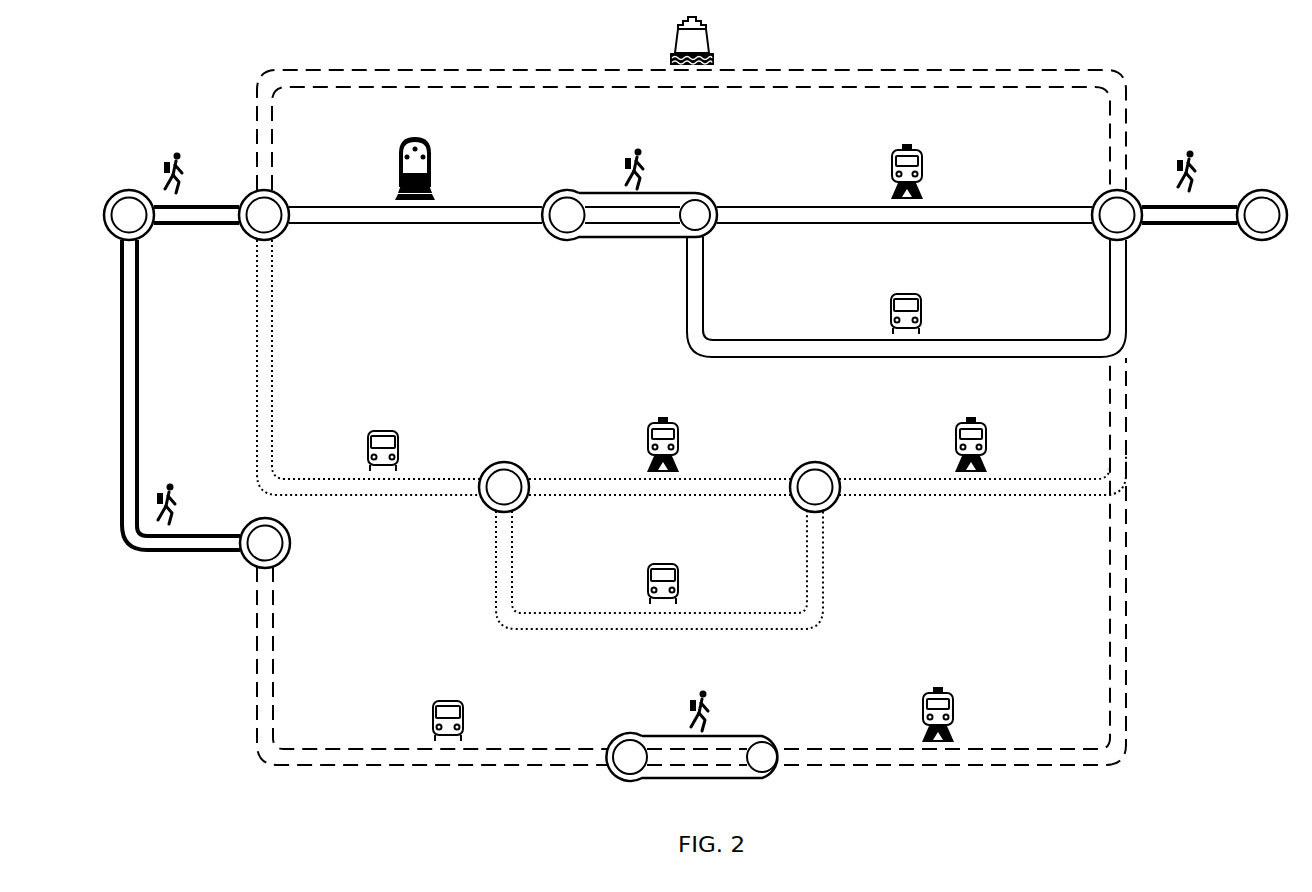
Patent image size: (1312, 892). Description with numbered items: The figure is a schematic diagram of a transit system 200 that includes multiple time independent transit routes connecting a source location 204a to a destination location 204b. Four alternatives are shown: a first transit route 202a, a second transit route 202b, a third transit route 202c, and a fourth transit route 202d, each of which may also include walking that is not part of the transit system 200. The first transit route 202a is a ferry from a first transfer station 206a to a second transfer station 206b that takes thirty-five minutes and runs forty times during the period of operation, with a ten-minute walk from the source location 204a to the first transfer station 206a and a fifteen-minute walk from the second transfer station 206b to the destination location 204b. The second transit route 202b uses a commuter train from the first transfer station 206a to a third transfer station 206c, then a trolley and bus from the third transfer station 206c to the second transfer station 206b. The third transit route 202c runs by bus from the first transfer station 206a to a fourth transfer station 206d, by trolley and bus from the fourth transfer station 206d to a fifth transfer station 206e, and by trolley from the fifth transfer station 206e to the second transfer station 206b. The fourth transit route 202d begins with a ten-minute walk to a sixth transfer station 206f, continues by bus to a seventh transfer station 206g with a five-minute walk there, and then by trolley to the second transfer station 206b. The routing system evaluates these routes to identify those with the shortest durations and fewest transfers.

The transit system 200 is at (141, 70).
The first transit route 202a is at (257, 111).
The second transit route 202b is at (342, 224).
The third transit route 202c is at (257, 368).
The fourth transit route 202d is at (257, 648).
The source location 204a is at (150, 192).
The destination location 204b is at (1256, 193).
The first transfer station 206a is at (253, 195).
The second transfer station 206b is at (1100, 196).
The third transfer station 206c is at (552, 196).
The fourth transfer station 206d is at (490, 470).
The fifth transfer station 206e is at (798, 469).
The sixth transfer station 206f is at (250, 524).
The seventh transfer station 206g is at (615, 740).